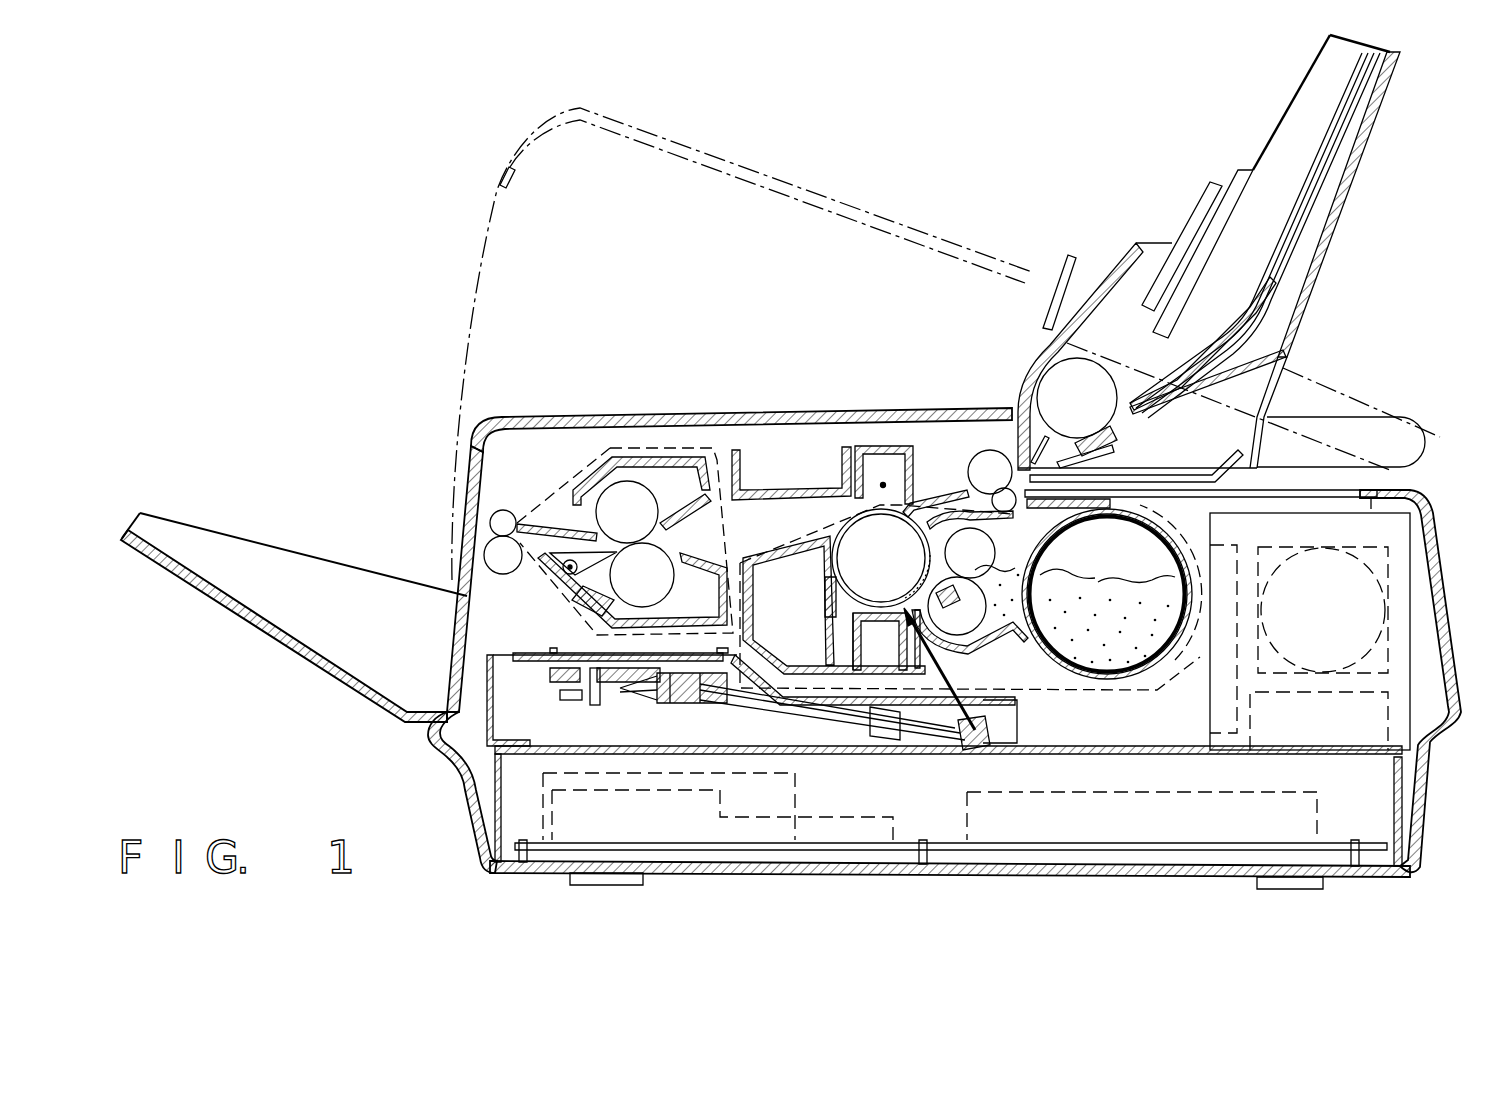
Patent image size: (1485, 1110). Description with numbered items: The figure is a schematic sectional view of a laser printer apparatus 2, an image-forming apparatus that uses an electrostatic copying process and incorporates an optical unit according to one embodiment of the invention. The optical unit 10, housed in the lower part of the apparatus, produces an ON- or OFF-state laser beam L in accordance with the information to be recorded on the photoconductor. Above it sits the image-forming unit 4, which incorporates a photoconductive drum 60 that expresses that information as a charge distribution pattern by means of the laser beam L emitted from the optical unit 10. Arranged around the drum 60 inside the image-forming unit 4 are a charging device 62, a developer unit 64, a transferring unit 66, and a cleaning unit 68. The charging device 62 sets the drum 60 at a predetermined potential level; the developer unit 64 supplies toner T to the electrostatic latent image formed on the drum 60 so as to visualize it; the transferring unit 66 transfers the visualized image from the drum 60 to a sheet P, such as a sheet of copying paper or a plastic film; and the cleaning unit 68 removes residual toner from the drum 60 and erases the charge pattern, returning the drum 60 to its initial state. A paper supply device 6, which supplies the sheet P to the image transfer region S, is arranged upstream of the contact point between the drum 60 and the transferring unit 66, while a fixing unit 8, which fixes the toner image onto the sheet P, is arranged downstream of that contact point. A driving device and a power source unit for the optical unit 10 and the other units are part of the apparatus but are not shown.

The laser printer apparatus 2 is at (1103, 243).
The image-forming unit 4 is at (1132, 692).
The paper supply device 6 is at (1290, 344).
The fixing unit 8 is at (663, 447).
The optical unit 10 is at (505, 652).
The photoconductive drum 60 is at (912, 516).
The charging device 62 is at (836, 650).
The developer unit 64 is at (988, 643).
The transferring unit 66 is at (902, 445).
The cleaning unit 68 is at (778, 552).
The sheet P is at (1348, 128).
The image transfer region S is at (878, 478).
The toner T is at (924, 555).
The laser beam L is at (760, 714).